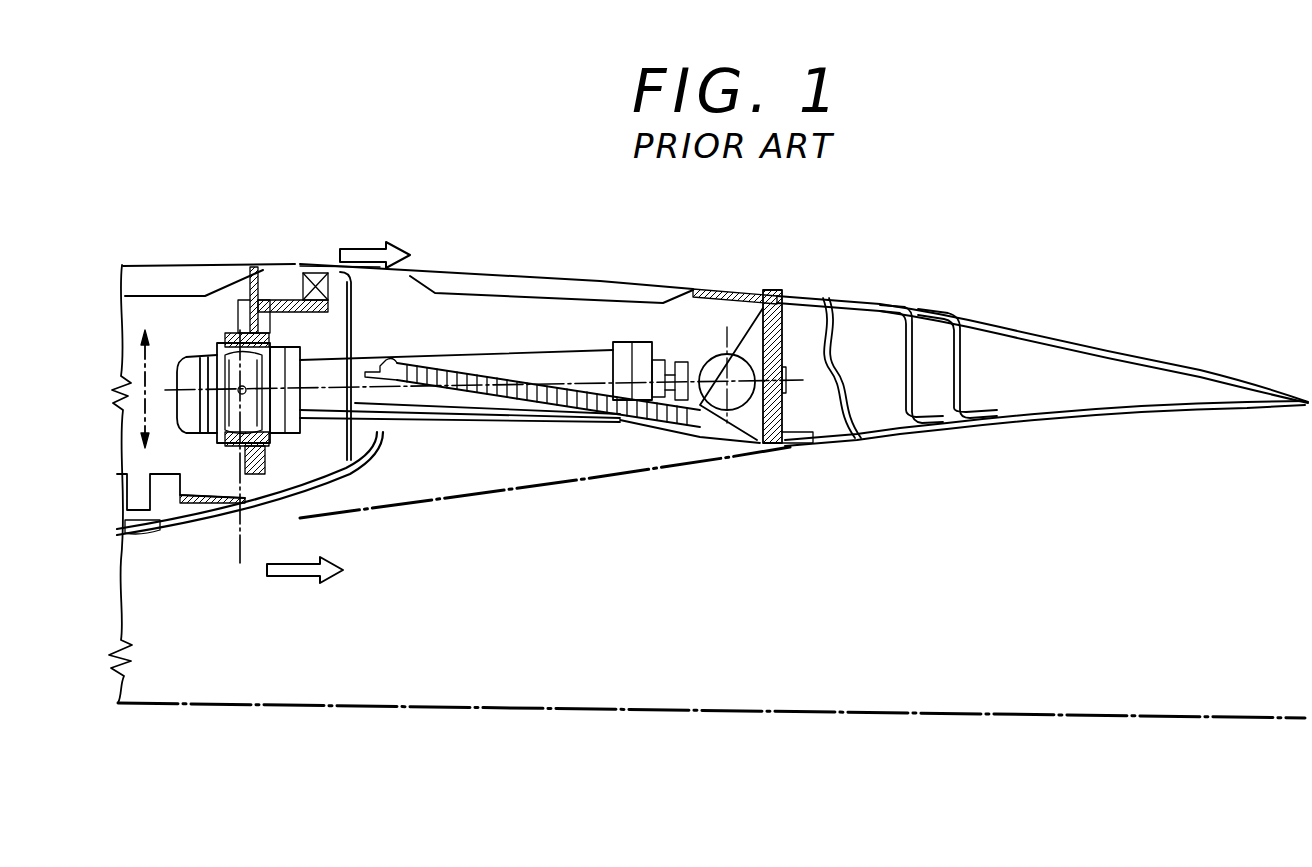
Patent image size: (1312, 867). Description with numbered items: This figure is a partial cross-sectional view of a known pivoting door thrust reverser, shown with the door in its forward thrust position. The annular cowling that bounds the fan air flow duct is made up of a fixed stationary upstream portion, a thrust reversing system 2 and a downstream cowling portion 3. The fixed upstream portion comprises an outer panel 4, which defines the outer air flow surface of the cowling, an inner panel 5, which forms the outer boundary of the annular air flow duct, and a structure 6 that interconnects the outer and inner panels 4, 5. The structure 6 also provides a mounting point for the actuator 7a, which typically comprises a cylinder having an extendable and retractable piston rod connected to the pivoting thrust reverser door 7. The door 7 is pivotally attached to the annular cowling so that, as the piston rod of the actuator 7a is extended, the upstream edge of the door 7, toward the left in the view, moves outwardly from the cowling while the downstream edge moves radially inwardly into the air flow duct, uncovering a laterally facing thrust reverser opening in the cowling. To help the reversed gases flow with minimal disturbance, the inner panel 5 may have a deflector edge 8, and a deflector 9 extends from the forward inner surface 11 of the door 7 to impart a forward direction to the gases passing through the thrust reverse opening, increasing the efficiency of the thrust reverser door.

The thrust reversing system 2 is at (722, 277).
The downstream cowling portion 3 is at (1042, 371).
The outer panel 4 is at (209, 281).
The inner panel 5 is at (139, 540).
The structure 6 is at (240, 482).
The pivoting thrust reverser door 7 is at (572, 300).
The actuator 7a is at (527, 361).
The deflector edge 8 is at (366, 471).
The deflector 9 is at (346, 442).
The forward inner surface 11 is at (576, 406).